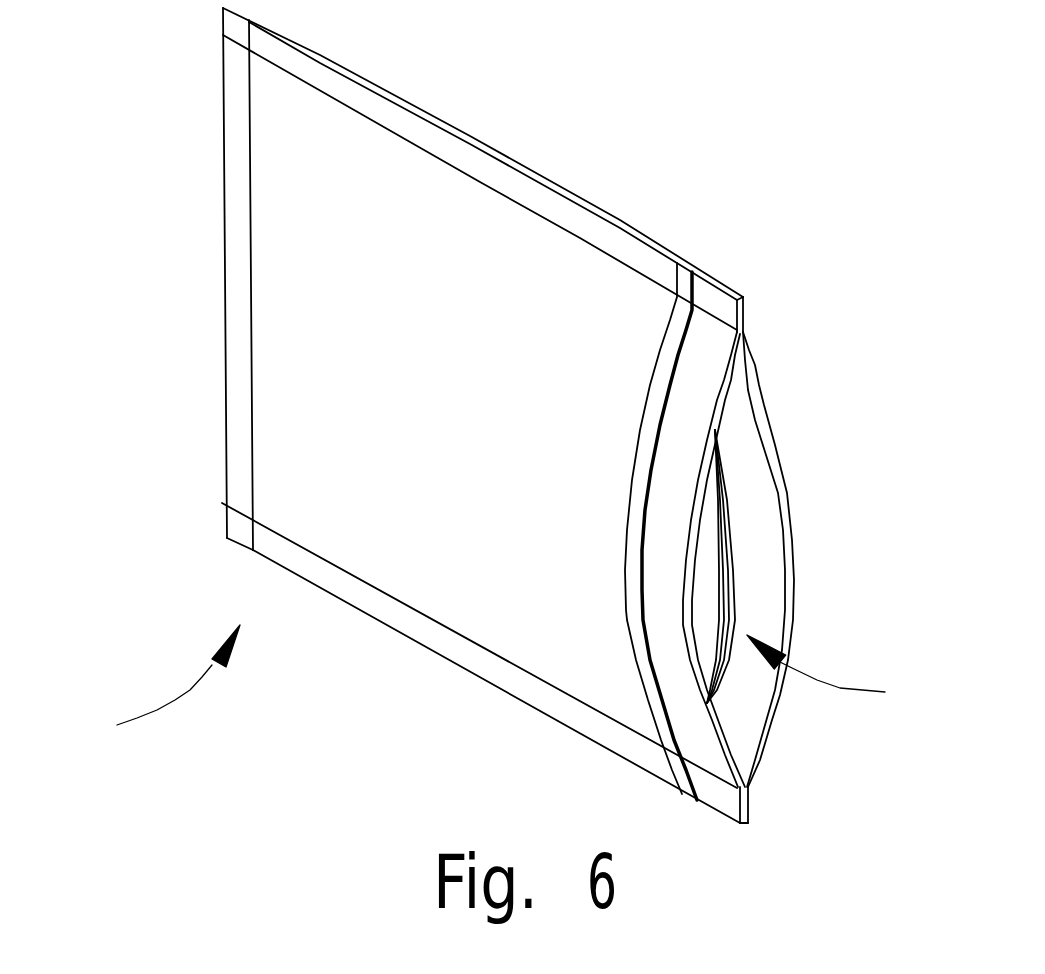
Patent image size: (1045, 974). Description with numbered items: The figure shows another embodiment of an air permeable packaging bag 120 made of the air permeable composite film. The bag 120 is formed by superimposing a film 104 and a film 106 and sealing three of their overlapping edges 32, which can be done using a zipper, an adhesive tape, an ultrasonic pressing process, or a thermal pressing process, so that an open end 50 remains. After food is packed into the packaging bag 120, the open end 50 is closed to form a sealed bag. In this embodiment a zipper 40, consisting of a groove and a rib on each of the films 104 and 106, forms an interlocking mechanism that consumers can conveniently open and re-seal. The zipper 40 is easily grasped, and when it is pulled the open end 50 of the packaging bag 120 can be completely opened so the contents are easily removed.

The overlapping edges 32 is at (419, 414).
The film 104 is at (403, 411).
The zipper 40 is at (675, 451).
The film 106 is at (813, 559).
The open end 50 is at (843, 678).
The air permeable packaging bag 120 is at (143, 691).